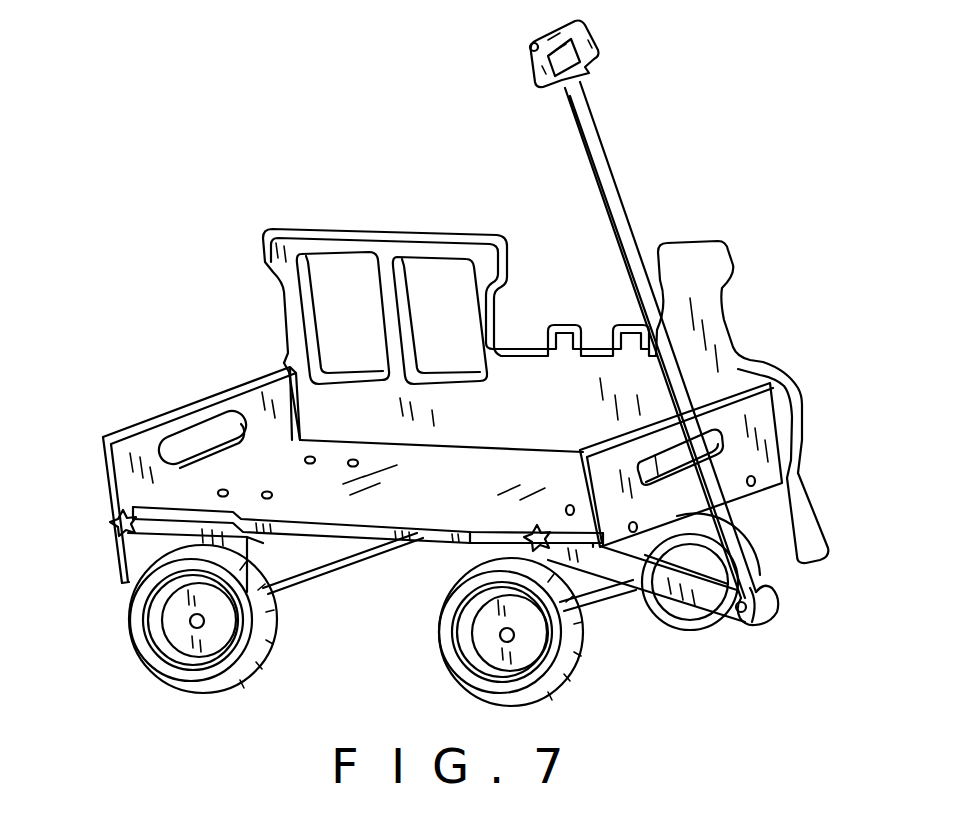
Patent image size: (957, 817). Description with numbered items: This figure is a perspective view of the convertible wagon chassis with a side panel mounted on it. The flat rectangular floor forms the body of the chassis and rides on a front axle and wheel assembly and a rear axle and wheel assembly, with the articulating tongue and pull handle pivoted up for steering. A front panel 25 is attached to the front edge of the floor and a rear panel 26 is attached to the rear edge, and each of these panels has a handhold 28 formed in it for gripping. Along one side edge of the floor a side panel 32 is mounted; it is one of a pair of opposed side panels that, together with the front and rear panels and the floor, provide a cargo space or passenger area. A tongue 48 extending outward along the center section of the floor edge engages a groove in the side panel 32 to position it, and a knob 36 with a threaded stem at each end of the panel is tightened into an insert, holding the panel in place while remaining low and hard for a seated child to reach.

The front panel 25 is at (758, 447).
The rear panel 26 is at (132, 459).
The handhold 28 is at (202, 437).
The side panel 32 is at (735, 310).
The knob 36 is at (117, 534).
The tongue 48 is at (412, 542).